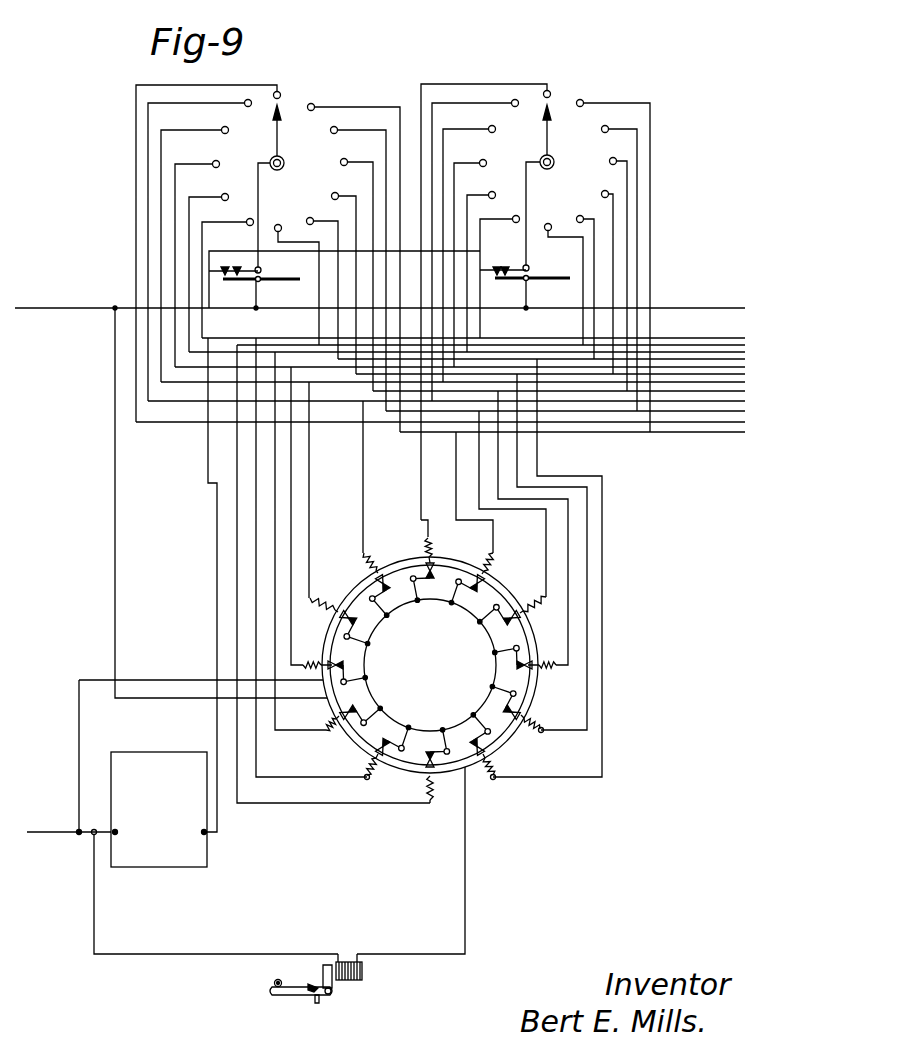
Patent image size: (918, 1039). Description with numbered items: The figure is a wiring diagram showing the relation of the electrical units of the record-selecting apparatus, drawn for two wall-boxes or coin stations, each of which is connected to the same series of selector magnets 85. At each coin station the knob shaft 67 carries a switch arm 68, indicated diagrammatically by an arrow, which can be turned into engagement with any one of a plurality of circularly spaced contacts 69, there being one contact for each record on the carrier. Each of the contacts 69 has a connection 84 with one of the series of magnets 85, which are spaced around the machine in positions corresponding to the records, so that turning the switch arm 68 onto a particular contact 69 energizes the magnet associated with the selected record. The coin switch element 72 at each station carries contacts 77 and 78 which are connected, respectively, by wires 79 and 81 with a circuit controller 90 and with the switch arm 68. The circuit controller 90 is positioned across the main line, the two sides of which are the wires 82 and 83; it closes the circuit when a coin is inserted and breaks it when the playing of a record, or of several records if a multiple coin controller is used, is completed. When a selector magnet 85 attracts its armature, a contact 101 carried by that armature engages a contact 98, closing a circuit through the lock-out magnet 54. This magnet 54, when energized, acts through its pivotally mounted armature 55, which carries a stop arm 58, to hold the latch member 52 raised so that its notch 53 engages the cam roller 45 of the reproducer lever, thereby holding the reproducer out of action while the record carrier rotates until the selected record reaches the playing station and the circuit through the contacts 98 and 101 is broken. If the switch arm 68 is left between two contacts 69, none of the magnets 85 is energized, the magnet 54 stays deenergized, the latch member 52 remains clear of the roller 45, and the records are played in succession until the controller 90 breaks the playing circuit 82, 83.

The cam roller 45 is at (273, 982).
The latch member 52 is at (288, 996).
The notch 53 is at (322, 978).
The magnet 54 is at (352, 980).
The armature 55 is at (312, 983).
The stop arm 58 is at (317, 1004).
The shaft 67 is at (281, 169).
The switch arm 68 is at (275, 139).
The contacts 69 is at (246, 106).
The switch arm 72 is at (250, 282).
The contact 77 is at (367, 254).
The contact 78 is at (506, 268).
The wire 79 is at (206, 466).
The wire 81 is at (259, 212).
The wire 82 is at (40, 312).
The wire 83 is at (35, 832).
The connection 84 is at (231, 85).
The magnets 85 is at (366, 566).
The circuit controller 90 is at (199, 735).
The contact 98 is at (360, 750).
The contact 101 is at (505, 690).